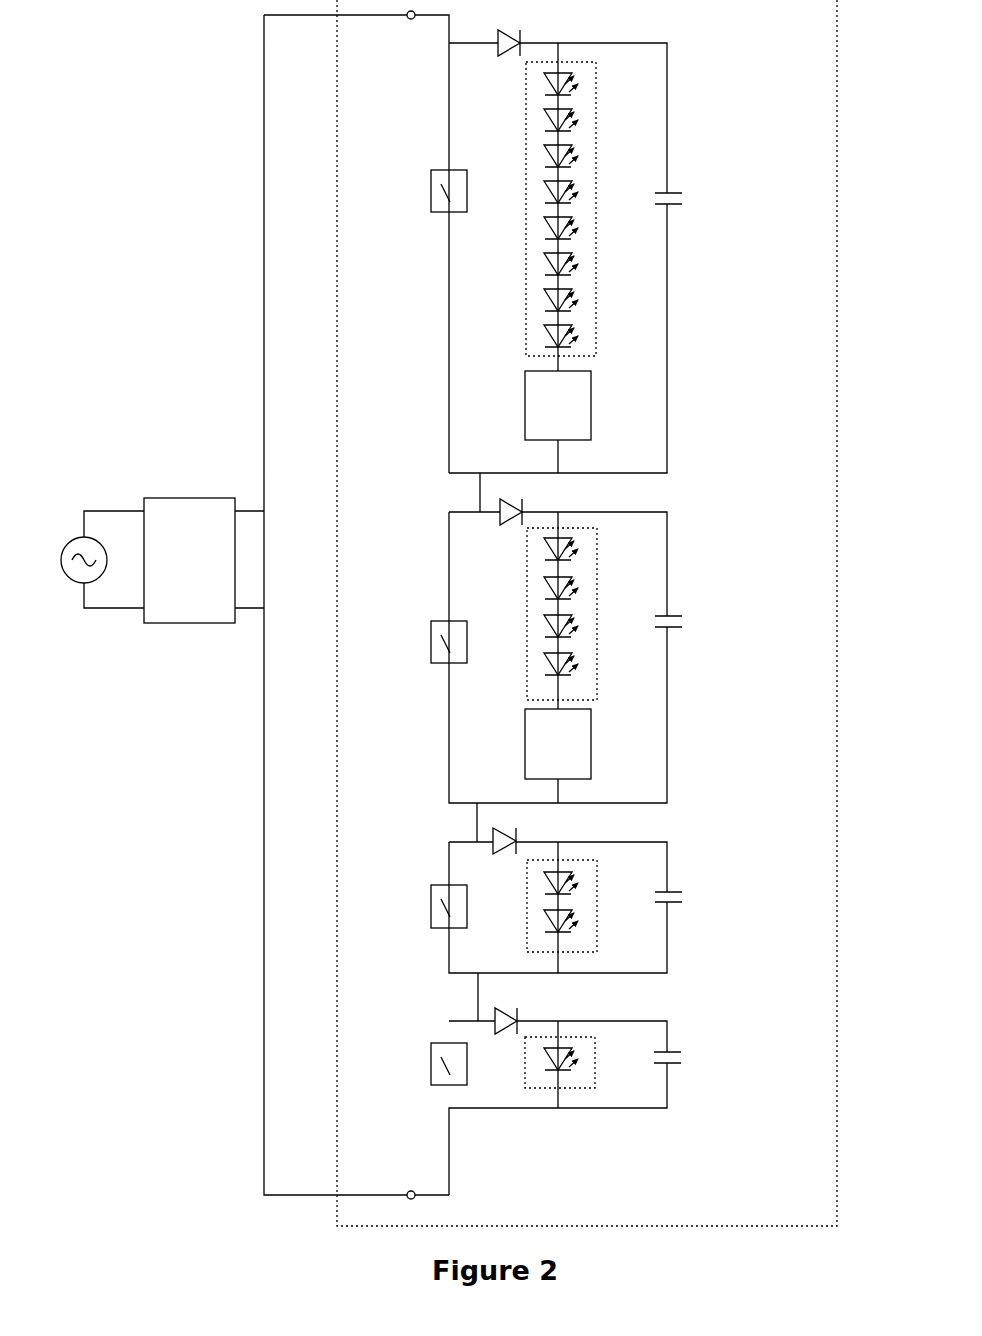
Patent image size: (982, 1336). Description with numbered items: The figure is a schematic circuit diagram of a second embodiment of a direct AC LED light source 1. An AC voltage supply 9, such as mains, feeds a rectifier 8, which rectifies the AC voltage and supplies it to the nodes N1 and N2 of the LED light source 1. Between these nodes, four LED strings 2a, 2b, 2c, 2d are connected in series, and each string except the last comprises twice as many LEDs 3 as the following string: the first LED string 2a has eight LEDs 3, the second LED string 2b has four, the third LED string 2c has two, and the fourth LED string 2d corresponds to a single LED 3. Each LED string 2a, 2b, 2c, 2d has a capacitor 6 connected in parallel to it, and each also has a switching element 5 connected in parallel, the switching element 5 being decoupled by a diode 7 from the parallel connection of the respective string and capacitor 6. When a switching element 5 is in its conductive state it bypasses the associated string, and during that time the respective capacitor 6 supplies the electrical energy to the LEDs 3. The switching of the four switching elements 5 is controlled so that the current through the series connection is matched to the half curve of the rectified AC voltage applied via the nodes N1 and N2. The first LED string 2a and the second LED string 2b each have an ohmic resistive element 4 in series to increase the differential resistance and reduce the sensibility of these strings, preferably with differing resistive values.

The LED light source 1 is at (841, 198).
The first LED string 2a is at (601, 172).
The second LED string 2b is at (601, 615).
The third LED string 2c is at (601, 900).
The fourth LED string 2d is at (598, 1066).
The LEDs 3 is at (541, 121).
The ohmic resistive element 4 is at (558, 575).
The switching element 5 is at (431, 200).
The capacitor 6 is at (686, 203).
The diode 7 is at (511, 58).
The rectifier 8 is at (189, 560).
The AC voltage supply 9 is at (70, 540).
The node N1 is at (408, 20).
The node N2 is at (409, 1188).